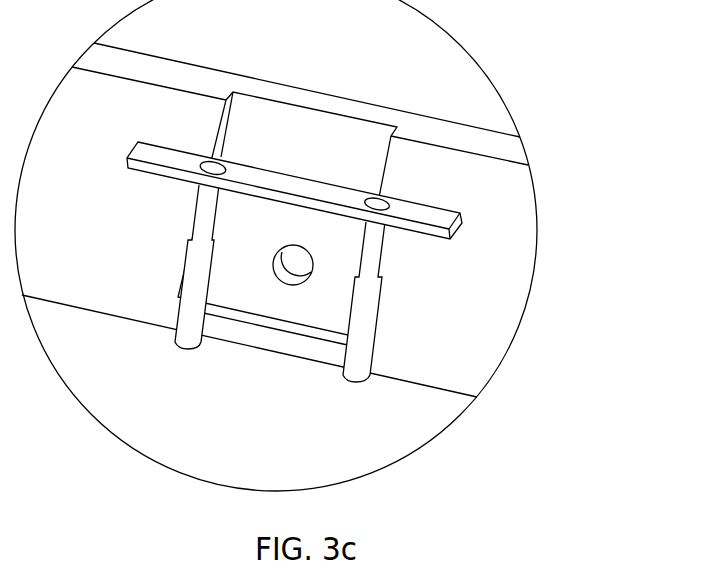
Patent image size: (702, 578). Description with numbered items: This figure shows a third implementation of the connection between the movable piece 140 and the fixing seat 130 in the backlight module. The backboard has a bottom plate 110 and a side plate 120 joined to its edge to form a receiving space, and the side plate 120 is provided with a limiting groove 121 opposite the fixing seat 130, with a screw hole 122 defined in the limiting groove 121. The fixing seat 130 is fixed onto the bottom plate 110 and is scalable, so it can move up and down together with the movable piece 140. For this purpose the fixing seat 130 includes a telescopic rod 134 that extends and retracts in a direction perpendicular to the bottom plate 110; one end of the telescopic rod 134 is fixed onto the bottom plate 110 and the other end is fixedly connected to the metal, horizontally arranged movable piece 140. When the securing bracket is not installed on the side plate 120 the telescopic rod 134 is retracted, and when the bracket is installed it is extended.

The bottom plate 110 is at (382, 447).
The side plate 120 is at (510, 190).
The limiting groove 121 is at (317, 133).
The screw hole 122 is at (297, 262).
The fixing seat 130 is at (201, 284).
The telescopic rod 134 is at (217, 283).
The movable piece 140 is at (441, 219).